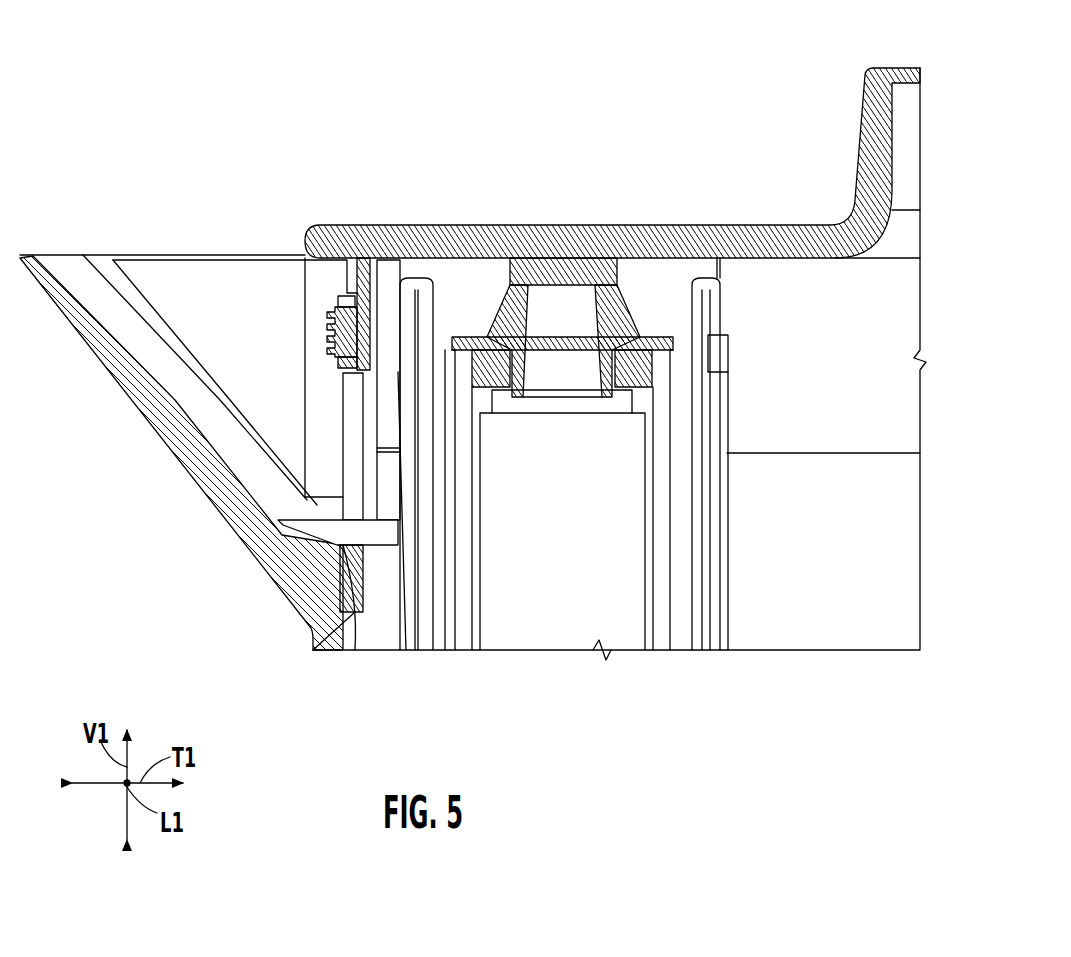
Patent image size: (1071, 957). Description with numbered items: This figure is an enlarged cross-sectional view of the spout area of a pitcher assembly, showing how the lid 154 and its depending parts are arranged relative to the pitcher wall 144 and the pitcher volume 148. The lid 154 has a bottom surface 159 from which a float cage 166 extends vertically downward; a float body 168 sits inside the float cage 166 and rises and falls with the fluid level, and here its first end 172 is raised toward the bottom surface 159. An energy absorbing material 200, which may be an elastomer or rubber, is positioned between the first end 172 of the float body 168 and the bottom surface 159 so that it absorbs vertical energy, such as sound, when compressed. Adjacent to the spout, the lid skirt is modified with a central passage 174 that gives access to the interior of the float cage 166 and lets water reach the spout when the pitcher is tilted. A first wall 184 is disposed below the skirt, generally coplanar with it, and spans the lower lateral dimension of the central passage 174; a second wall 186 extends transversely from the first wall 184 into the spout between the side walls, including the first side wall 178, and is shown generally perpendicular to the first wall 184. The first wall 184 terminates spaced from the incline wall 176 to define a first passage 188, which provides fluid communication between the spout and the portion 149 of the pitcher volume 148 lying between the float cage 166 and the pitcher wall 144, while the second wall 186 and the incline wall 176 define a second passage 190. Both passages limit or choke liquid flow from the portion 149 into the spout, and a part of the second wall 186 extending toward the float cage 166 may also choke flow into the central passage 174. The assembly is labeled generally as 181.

The pitcher wall 144 is at (311, 648).
The pitcher volume 148 is at (830, 567).
The portion of the pitcher volume 149 is at (360, 643).
The lid 154 is at (512, 225).
The bottom surface 159 is at (785, 260).
The float cage 166 is at (703, 640).
The float body 168 is at (487, 620).
The first end of the float body 172 is at (630, 315).
The central passage 174 is at (338, 442).
The incline wall 176 is at (196, 483).
The first side wall 178 is at (200, 255).
The cutting assembly 181 is at (171, 128).
The first wall 184 is at (372, 645).
The second wall 186 is at (313, 540).
The first passage 188 is at (351, 645).
The second passage 190 is at (280, 527).
The energy absorbing material 200 is at (620, 268).